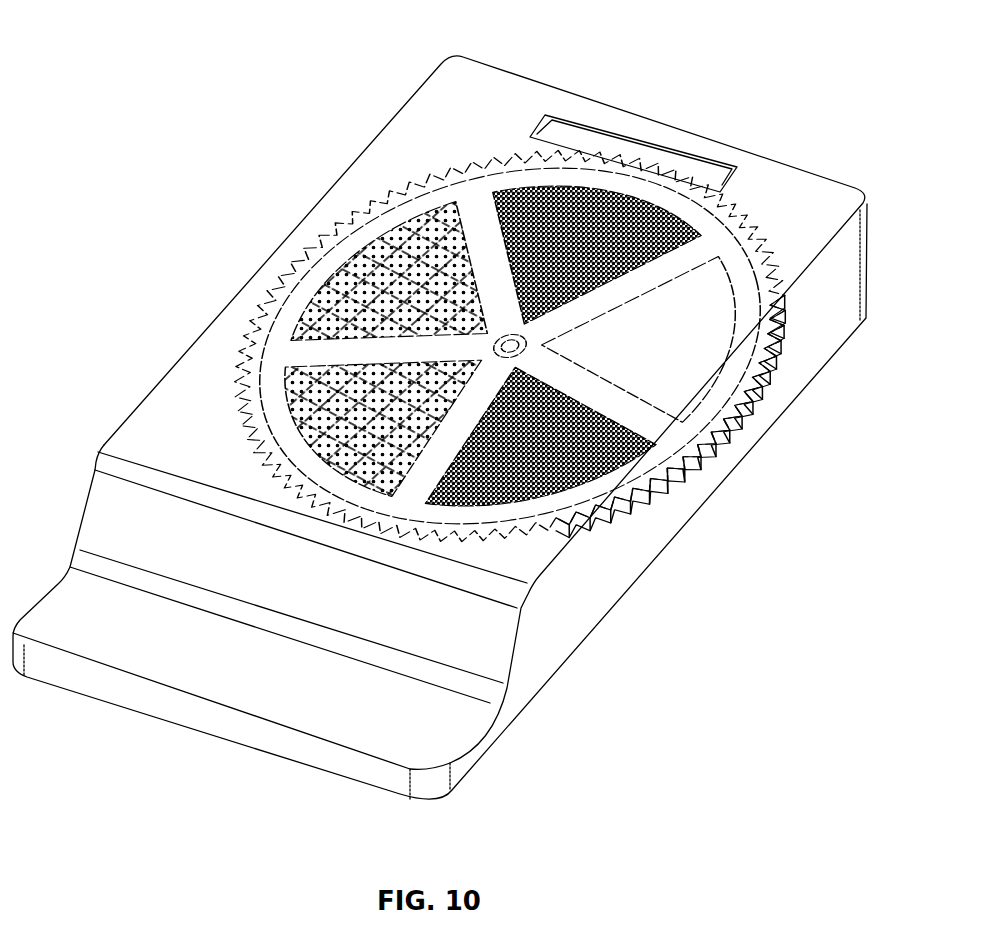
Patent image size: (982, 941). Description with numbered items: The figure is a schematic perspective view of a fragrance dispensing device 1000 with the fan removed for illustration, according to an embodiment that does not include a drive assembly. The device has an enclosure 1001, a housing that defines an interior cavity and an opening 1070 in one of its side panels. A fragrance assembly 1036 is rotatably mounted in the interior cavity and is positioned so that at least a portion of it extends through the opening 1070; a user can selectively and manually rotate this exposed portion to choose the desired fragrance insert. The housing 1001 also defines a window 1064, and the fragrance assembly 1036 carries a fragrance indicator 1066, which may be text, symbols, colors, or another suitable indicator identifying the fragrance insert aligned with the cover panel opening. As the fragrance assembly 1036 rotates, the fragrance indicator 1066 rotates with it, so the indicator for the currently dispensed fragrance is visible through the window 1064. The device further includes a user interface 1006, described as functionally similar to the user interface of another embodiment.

The fragrance dispensing device 1000 is at (183, 44).
The enclosure 1001 is at (755, 123).
The window 1064 is at (560, 118).
The user interface 1006 is at (598, 129).
The fragrance indicator 1066 is at (654, 143).
The fragrance assembly 1036 is at (737, 420).
The opening 1070 is at (647, 492).